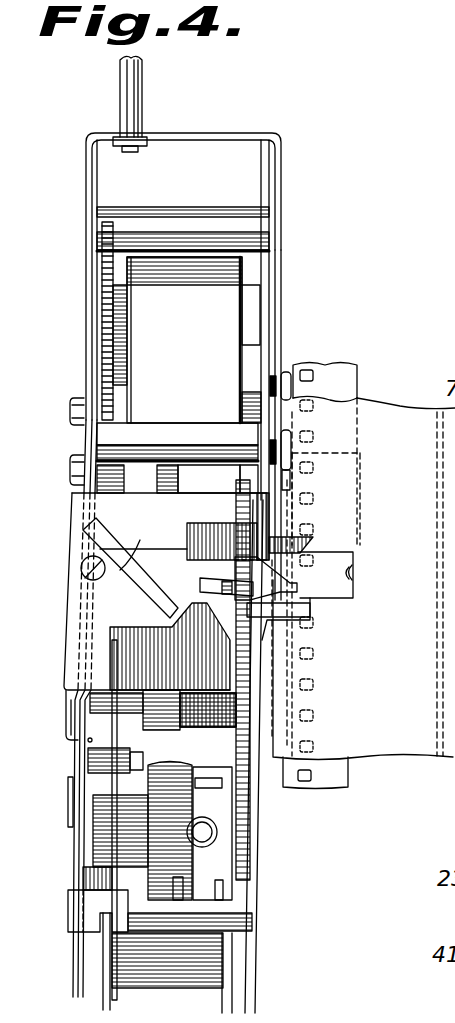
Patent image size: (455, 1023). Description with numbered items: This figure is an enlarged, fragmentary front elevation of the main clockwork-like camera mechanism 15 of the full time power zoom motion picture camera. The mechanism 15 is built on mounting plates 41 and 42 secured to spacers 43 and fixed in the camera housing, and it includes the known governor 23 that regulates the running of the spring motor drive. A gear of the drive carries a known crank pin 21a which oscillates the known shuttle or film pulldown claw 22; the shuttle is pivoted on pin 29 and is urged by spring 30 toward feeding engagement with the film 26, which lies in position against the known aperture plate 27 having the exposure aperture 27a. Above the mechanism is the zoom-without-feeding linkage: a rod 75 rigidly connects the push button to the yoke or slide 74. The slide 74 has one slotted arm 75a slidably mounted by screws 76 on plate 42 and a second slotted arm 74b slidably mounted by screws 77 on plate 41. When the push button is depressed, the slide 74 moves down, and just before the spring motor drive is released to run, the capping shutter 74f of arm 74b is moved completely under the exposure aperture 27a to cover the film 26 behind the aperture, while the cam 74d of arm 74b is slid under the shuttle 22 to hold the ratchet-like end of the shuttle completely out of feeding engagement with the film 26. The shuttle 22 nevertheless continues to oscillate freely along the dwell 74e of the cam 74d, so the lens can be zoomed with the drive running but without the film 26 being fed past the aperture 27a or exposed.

The camera mechanism 15 is at (302, 182).
The rod 75 is at (120, 75).
The yoke or slide 74 is at (248, 137).
The slotted arm 75a is at (84, 322).
The second slotted arm 74b is at (279, 287).
The spacers 43 is at (204, 216).
The mounting plate 41 is at (269, 238).
The mounting plate 42 is at (100, 228).
The screws 76 is at (73, 468).
The screws 77 is at (283, 382).
The film 26 is at (333, 372).
The aperture plate 27 is at (393, 748).
The capping shutter 74f is at (363, 542).
The dwell 74e is at (274, 503).
The cam 74d is at (278, 535).
The pin 29 is at (88, 560).
The spring 30 is at (123, 563).
The shuttle or film pulldown claw 22 is at (287, 583).
The crank pin 21a is at (223, 593).
The exposure aperture 27a is at (352, 573).
The governor 23 is at (222, 908).